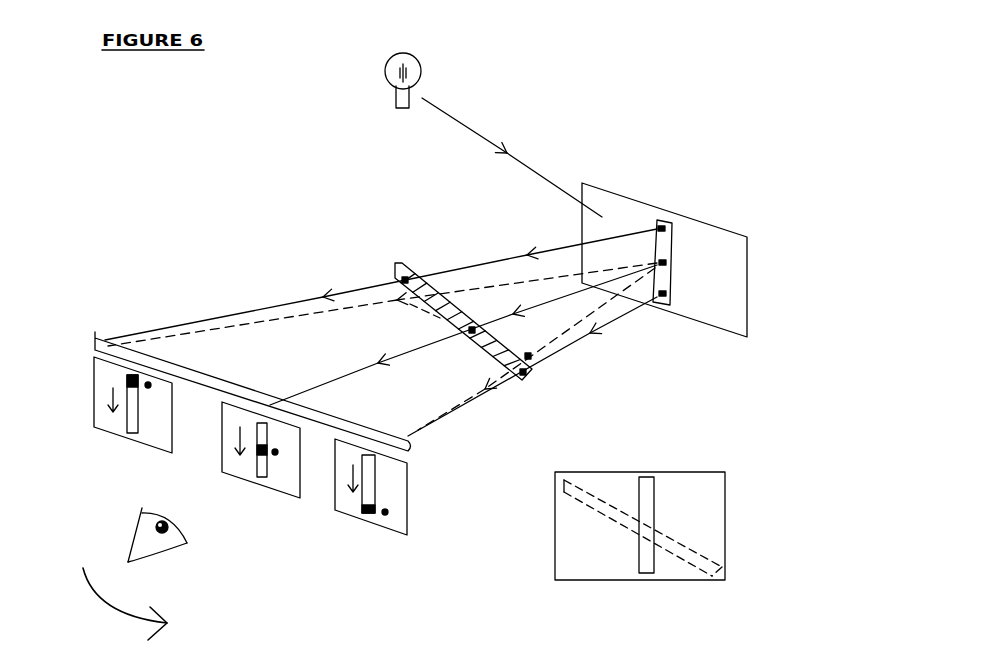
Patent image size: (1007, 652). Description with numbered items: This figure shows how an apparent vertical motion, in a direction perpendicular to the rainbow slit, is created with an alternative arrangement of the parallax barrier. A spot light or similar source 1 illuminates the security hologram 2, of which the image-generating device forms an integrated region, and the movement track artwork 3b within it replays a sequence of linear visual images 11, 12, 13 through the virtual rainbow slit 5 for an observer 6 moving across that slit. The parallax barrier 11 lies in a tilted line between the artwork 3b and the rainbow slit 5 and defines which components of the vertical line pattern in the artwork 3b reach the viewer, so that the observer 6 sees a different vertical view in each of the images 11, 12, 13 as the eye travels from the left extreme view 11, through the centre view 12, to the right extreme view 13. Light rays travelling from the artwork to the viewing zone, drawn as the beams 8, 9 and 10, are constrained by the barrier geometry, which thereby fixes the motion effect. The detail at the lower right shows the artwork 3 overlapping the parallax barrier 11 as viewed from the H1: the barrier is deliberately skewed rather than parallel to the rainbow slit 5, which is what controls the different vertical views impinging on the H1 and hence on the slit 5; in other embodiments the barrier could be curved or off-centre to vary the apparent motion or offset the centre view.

The spot light source 1 is at (493, 135).
The security hologram 2 is at (749, 308).
The artwork 3 is at (657, 486).
The movement track artwork 3b is at (676, 249).
The virtual rainbow slit 5 is at (412, 447).
The observer 6 is at (144, 574).
The light beam 8 is at (381, 284).
The light beam 9 is at (382, 334).
The light beam 10 is at (536, 349).
The parallax barrier 11 is at (742, 538).
The linear visual image 12 is at (585, 372).
The right extreme view 13 is at (371, 492).